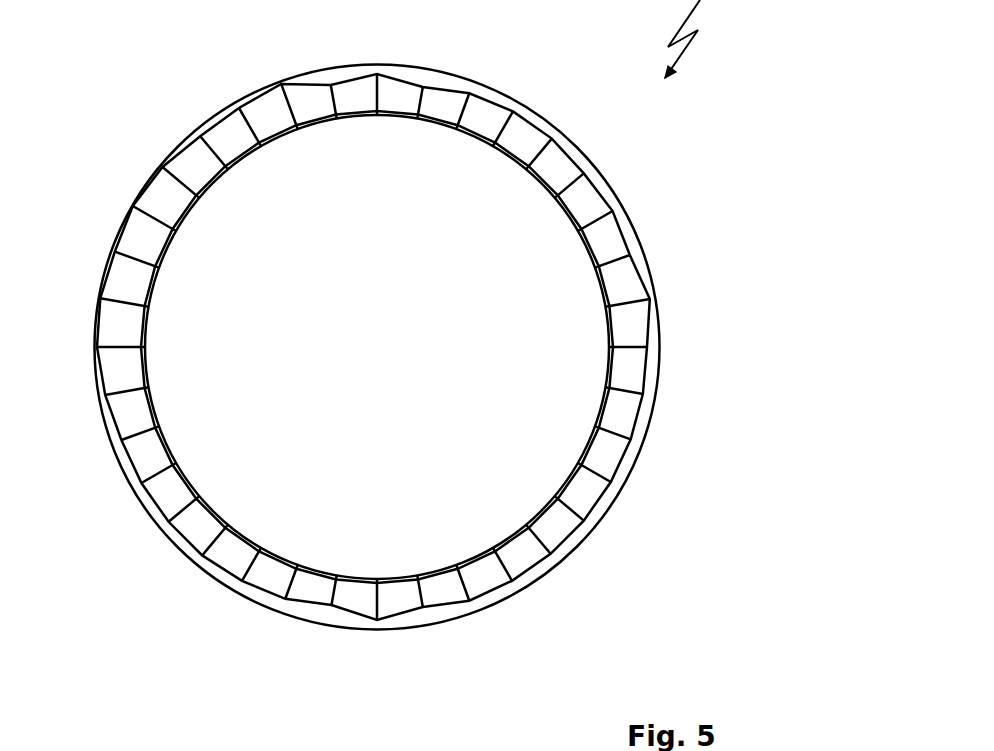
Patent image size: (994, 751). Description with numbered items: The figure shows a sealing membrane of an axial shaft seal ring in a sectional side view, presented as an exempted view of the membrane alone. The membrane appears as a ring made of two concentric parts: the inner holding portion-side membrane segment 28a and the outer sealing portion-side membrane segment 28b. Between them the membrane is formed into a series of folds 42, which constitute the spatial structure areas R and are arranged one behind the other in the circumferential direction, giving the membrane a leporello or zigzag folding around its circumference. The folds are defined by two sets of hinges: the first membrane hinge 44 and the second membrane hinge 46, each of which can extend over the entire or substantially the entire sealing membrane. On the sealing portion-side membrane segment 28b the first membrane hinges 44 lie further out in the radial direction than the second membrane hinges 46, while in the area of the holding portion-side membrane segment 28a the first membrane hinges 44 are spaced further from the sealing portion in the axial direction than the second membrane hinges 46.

The holding portion-side membrane segment 28a is at (433, 107).
The sealing portion-side membrane segment 28b is at (445, 80).
The folds 42 is at (230, 117).
The first membrane hinge 44 is at (273, 87).
The second membrane hinge 46 is at (227, 97).